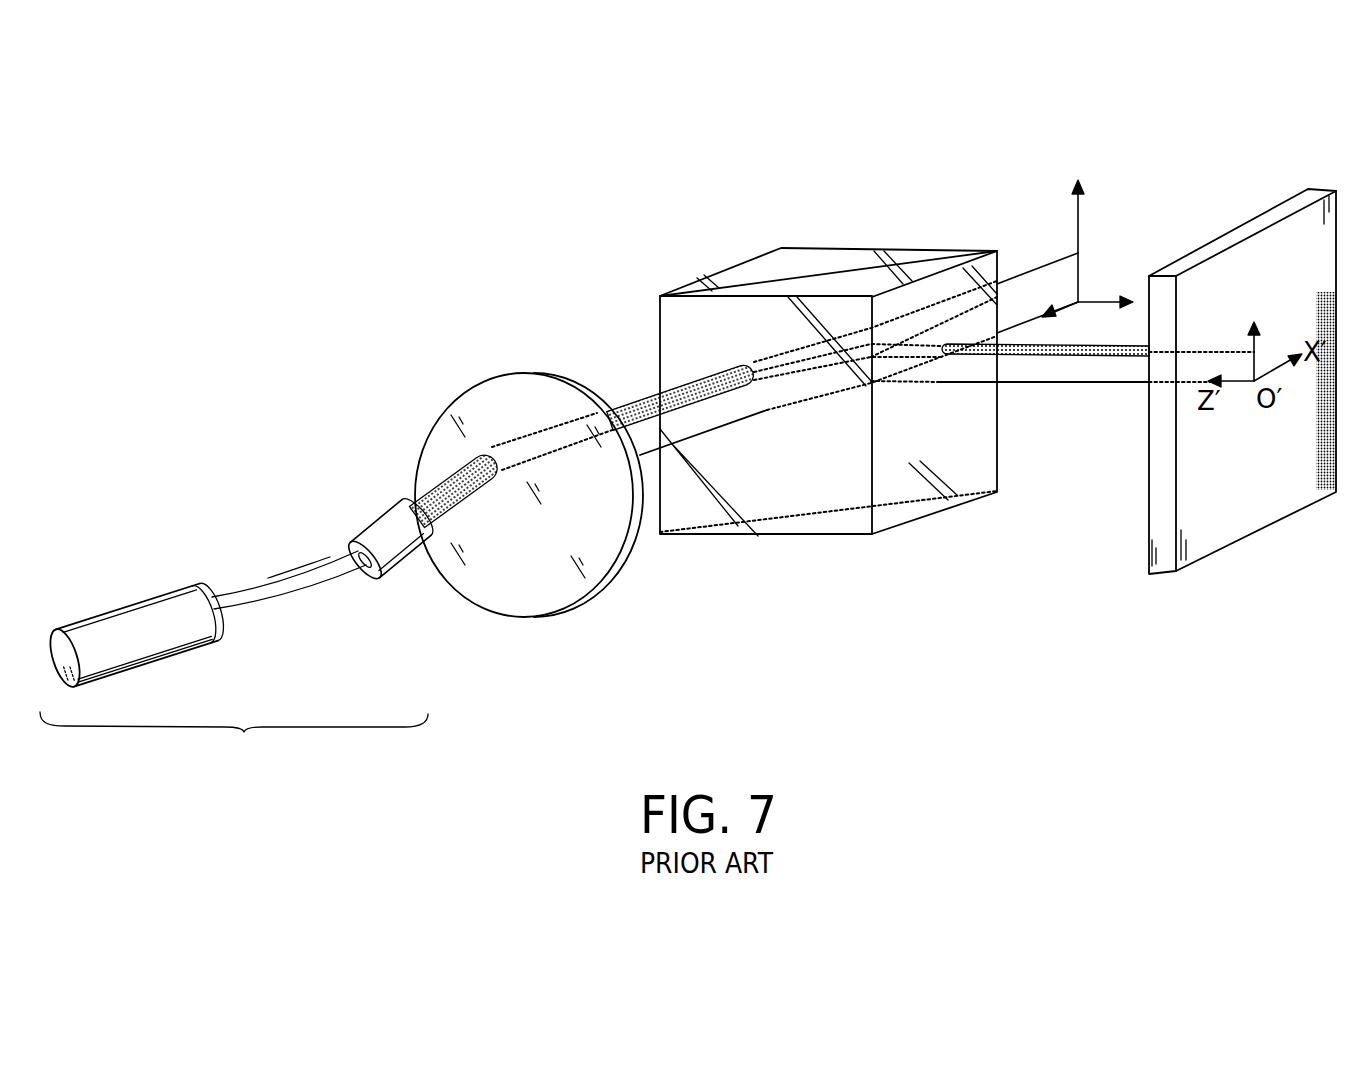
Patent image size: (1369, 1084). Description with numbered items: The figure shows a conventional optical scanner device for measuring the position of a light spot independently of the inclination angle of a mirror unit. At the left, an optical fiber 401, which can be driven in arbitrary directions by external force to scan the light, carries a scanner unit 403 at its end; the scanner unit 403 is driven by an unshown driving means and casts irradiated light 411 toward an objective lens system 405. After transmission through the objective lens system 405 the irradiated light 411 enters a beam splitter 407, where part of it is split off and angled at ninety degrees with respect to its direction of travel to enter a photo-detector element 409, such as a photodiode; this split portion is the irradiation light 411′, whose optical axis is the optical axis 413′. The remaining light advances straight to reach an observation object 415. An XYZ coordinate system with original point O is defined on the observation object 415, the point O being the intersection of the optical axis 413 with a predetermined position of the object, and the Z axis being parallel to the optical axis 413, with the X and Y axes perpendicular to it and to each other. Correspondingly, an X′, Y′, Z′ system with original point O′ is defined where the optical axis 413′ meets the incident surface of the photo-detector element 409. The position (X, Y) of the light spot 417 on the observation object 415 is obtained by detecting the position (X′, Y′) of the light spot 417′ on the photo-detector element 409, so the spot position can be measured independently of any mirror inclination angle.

The optical fiber 401 is at (234, 662).
The scanner unit 403 is at (390, 527).
The objective lens system 405 is at (527, 593).
The beam splitter 407 is at (833, 513).
The photo-detector element 409 is at (1221, 522).
The irradiated light 411 is at (440, 487).
The split irradiation light 411′ is at (1123, 350).
The optical axis 413 is at (650, 463).
The optical axis of split light 413′ is at (1063, 385).
The observation object 415 is at (1065, 225).
The light spot 417 is at (1075, 245).
The light spot on photo-detector 417′ is at (1245, 340).